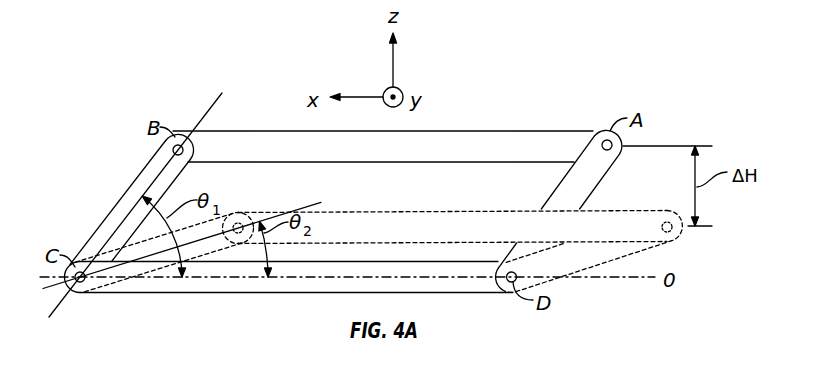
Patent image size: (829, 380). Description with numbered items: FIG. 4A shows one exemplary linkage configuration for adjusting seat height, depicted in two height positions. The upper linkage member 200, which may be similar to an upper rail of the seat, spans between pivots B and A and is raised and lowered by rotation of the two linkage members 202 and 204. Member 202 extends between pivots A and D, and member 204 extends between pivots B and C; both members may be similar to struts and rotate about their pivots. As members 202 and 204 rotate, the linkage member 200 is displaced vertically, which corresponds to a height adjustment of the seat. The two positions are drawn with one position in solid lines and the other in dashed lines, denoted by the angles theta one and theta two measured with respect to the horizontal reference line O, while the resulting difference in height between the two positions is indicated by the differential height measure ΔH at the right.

The linkage member 200 is at (473, 131).
The linkage member 202 is at (597, 172).
The linkage member 204 is at (125, 207).